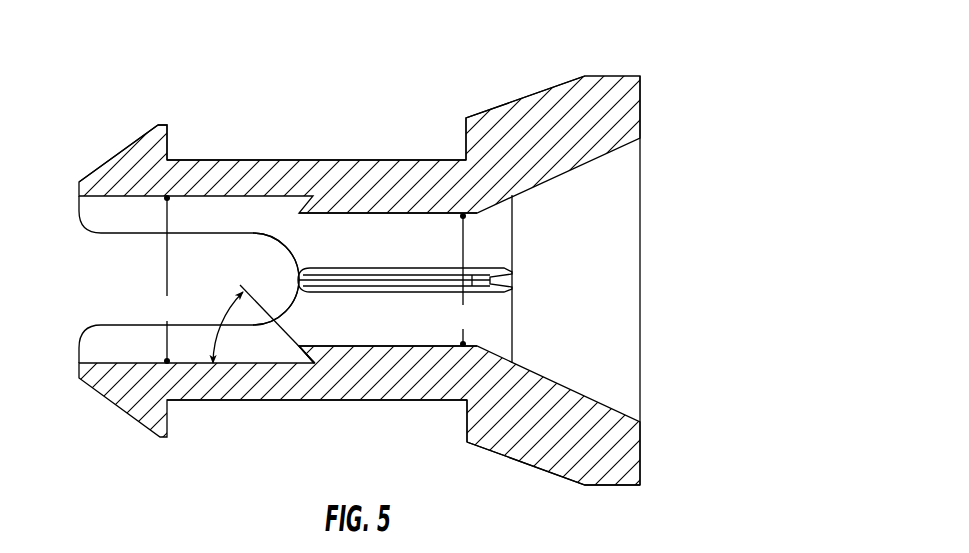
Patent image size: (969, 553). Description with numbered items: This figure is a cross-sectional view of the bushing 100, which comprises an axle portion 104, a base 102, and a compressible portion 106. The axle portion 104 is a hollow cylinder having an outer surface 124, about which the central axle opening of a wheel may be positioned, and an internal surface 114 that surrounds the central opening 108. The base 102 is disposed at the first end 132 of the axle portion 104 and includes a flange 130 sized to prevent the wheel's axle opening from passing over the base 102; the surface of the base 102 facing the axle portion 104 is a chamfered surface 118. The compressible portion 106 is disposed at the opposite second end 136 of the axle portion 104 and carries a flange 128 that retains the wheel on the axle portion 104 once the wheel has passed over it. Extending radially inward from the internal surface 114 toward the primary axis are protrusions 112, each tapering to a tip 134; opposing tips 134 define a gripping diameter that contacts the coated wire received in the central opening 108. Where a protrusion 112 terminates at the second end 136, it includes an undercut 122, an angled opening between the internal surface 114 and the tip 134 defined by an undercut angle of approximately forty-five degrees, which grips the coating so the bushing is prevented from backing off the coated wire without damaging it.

The bushing 100 is at (385, 80).
The base 102 is at (537, 460).
The axle portion 104 is at (287, 160).
The compressible portion 106 is at (130, 159).
The central opening 108 is at (190, 277).
The protrusions 112 is at (302, 272).
The internal surface 114 is at (298, 313).
The chamfered surface 118 is at (553, 472).
The undercut 122 is at (300, 362).
The outer surface 124 is at (212, 160).
The flange 128 is at (167, 133).
The flange 130 is at (463, 158).
The first end 132 is at (450, 418).
The tip 134 is at (317, 345).
The second end 136 is at (327, 405).